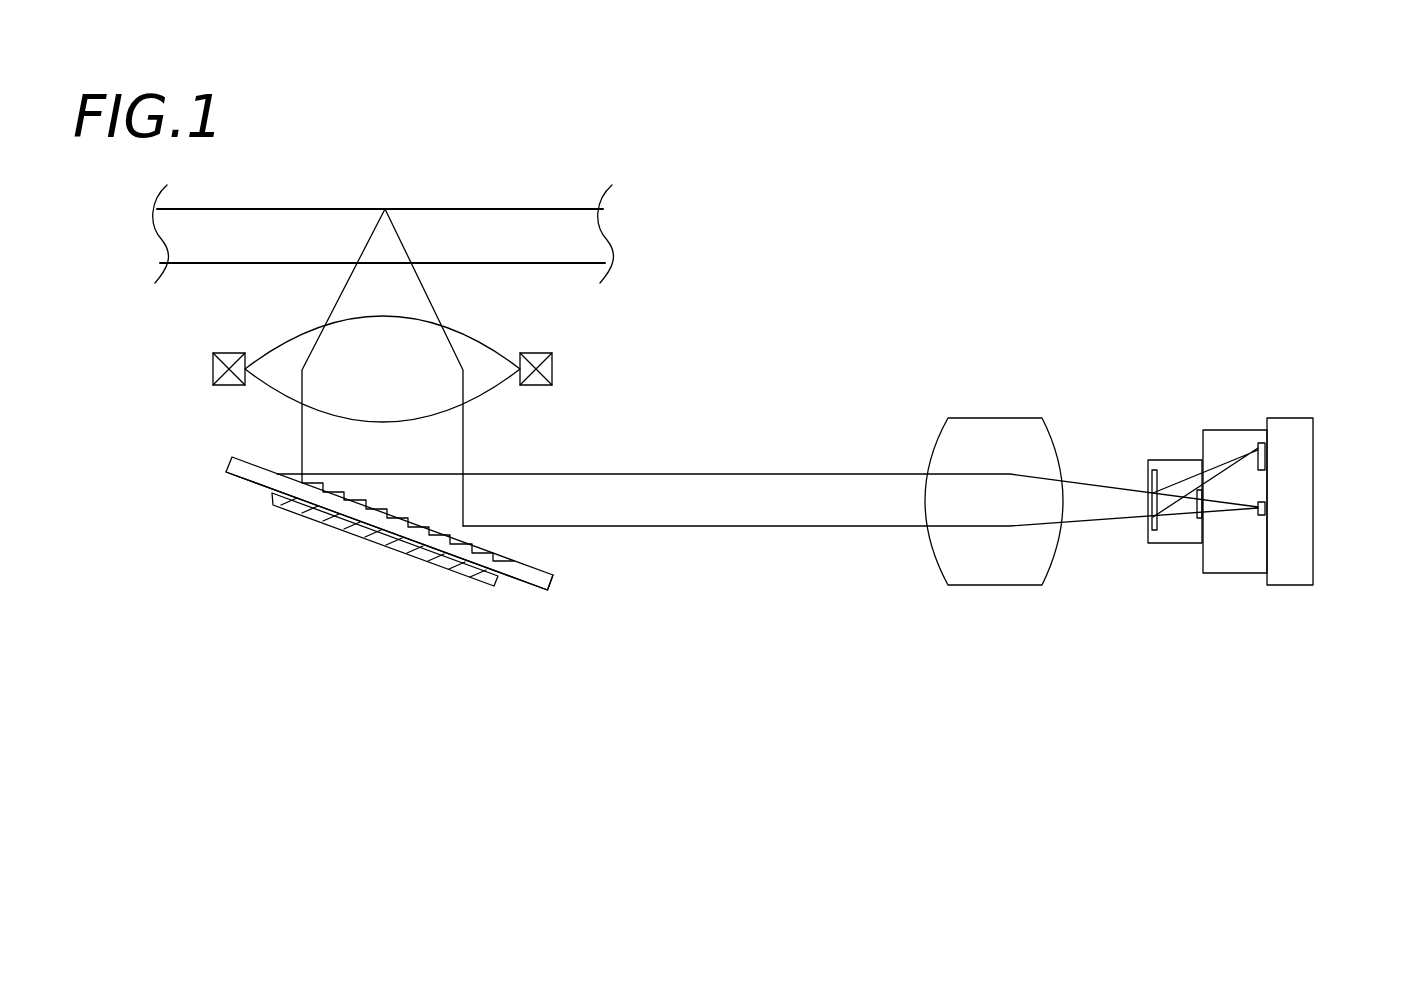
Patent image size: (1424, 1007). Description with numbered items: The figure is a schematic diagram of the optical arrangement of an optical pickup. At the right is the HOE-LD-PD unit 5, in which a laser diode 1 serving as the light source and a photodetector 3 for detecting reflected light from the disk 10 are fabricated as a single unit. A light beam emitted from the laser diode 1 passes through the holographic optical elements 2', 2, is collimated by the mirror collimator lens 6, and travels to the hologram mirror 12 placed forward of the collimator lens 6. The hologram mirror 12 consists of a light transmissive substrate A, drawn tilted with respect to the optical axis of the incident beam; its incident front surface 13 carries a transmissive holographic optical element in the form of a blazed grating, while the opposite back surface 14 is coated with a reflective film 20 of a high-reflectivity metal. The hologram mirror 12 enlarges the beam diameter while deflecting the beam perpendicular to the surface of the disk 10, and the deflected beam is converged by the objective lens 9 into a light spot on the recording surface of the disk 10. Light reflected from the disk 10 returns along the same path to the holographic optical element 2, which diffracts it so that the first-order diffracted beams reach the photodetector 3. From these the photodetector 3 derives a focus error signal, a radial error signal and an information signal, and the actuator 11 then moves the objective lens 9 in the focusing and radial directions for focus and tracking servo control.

The laser diode 1 is at (1267, 507).
The holographic optical element 2 is at (1181, 444).
The holographic optical element 2' is at (1175, 609).
The photodetector 3 is at (1260, 440).
The HOE-LD-PD unit 5 is at (1108, 305).
The collimator lens 6 is at (990, 585).
The objective lens 9 is at (290, 348).
The optical disk 10 is at (483, 226).
The actuator 11 is at (213, 368).
The hologram mirror 12 is at (522, 577).
The front surface 13 is at (427, 518).
The back surface 14 is at (528, 587).
The reflective film 20 is at (378, 537).
The light transmissive substrate A is at (276, 535).